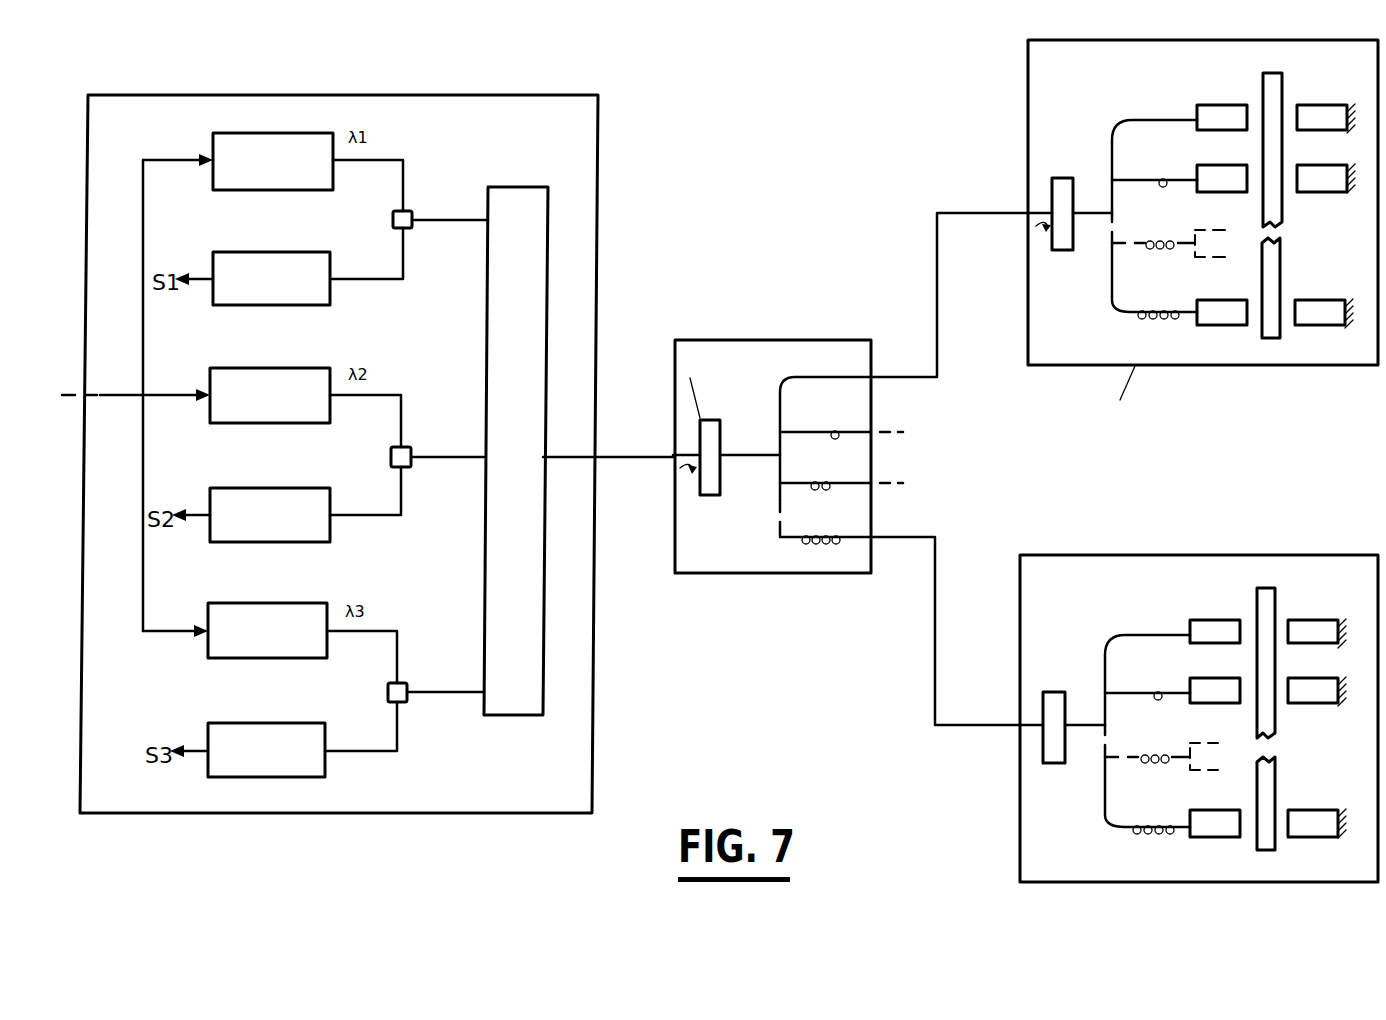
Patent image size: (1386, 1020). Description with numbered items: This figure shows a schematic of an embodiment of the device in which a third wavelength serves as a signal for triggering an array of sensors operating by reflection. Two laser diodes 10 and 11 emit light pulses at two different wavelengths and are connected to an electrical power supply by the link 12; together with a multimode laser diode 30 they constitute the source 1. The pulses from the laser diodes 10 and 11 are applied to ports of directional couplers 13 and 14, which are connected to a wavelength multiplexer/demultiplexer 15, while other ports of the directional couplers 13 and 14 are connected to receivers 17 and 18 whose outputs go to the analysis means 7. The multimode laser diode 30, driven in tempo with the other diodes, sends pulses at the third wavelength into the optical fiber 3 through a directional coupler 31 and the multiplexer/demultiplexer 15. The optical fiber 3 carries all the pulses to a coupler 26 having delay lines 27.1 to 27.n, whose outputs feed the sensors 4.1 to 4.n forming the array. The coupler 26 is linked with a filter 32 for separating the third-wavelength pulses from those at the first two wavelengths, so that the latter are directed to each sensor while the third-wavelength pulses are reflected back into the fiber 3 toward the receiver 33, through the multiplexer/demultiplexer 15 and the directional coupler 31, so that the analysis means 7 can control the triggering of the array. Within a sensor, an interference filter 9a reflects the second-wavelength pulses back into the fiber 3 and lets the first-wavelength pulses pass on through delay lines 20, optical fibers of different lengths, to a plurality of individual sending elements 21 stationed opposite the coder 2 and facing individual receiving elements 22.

The source 1 is at (382, 454).
The analysis means 7 is at (604, 218).
The laser diode 10 is at (268, 190).
The laser diode 11 is at (268, 423).
The multimode laser diode 30 is at (250, 618).
The link 12 is at (126, 395).
The directional coupler 13 is at (412, 215).
The directional coupler 14 is at (411, 450).
The directional coupler 31 is at (407, 688).
The wavelength multiplexer/demultiplexer 15 is at (490, 327).
The receiver 17 is at (272, 305).
The receiver 18 is at (297, 542).
The receiver 33 is at (237, 735).
The optical fiber 3 is at (629, 462).
The coupler 26 is at (745, 340).
The filter 32 is at (710, 483).
The delay line 27.1 is at (836, 377).
The delay line 27.n is at (825, 545).
The sensor 4.1 is at (1018, 108).
The sensor 4.n is at (1008, 810).
The interference filter 9a is at (1059, 178).
The delay lines 20 is at (1152, 120).
The individual sending elements 21 is at (1213, 113).
The coder 2 is at (1275, 90).
The individual receiving elements 22 is at (1322, 113).